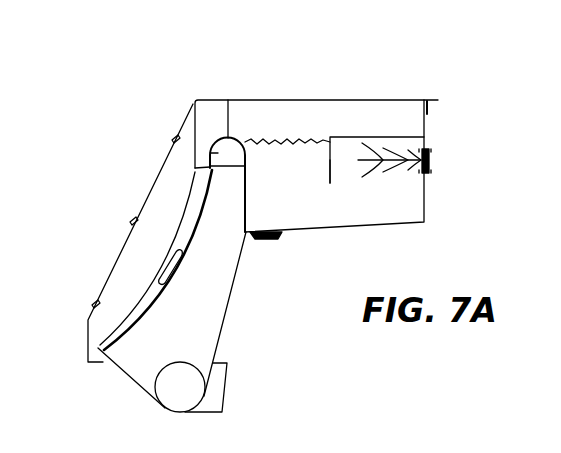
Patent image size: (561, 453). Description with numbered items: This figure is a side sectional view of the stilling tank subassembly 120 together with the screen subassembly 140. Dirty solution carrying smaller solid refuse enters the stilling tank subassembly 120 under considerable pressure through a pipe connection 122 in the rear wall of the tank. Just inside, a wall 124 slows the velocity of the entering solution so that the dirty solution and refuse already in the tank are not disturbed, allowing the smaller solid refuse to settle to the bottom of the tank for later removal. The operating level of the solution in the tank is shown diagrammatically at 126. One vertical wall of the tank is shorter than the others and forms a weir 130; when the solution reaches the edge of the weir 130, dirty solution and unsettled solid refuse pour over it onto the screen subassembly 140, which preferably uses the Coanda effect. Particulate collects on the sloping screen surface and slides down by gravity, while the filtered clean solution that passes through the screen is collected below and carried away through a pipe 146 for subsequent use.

The stilling tank subassembly 120 is at (456, 78).
The pipe connection 122 is at (431, 166).
The wall 124 is at (329, 163).
The level of solution 126 is at (275, 141).
The weir 130 is at (225, 147).
The screen subassembly 140 is at (116, 225).
The pipe 146 is at (178, 385).